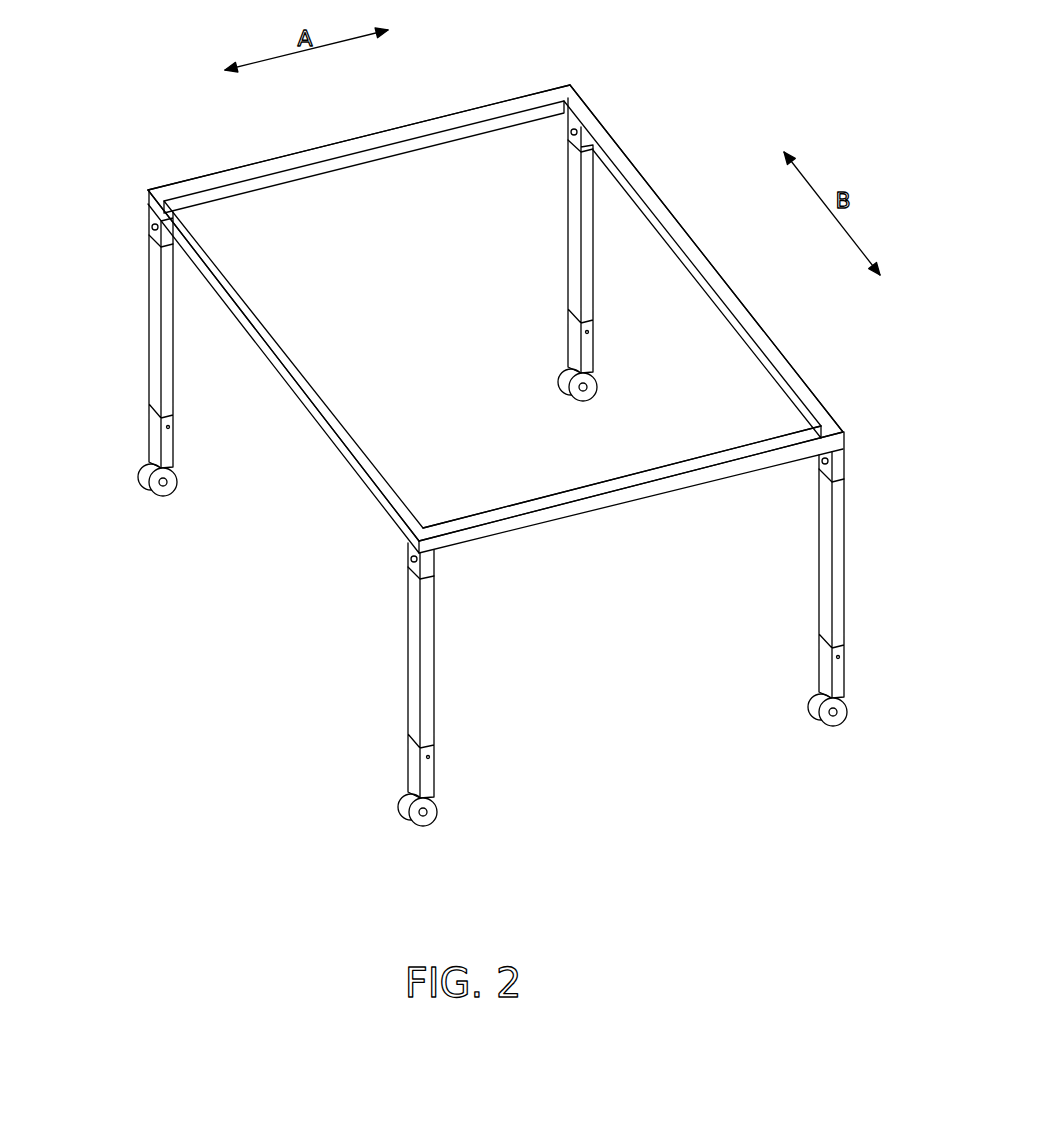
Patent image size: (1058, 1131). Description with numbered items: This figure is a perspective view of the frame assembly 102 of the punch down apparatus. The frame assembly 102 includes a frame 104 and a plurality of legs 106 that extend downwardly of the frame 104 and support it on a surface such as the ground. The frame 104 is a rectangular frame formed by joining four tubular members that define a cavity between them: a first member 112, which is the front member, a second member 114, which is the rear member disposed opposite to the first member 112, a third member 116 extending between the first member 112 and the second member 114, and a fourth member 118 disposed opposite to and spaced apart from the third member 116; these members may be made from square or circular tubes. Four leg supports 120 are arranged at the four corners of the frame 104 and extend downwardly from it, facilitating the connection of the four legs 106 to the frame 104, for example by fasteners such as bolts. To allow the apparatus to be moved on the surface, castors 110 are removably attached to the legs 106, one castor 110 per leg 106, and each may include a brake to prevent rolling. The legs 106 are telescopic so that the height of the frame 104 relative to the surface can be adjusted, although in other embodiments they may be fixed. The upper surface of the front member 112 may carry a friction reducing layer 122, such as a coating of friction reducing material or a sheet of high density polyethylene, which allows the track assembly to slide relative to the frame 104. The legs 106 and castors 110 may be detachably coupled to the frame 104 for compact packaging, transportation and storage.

The frame assembly 102 is at (719, 104).
The frame 104 is at (786, 357).
The legs 106 is at (149, 345).
The castors 110 is at (168, 498).
The first member 112 is at (725, 480).
The second member 114 is at (447, 116).
The third member 116 is at (724, 262).
The fourth member 118 is at (320, 423).
The leg supports 120 is at (148, 220).
The friction reducing layer 122 is at (634, 481).